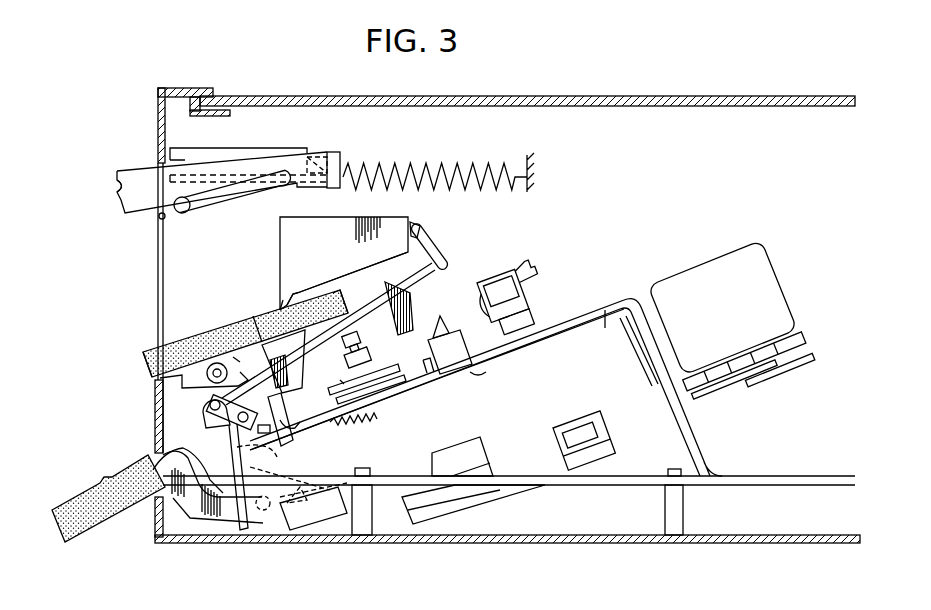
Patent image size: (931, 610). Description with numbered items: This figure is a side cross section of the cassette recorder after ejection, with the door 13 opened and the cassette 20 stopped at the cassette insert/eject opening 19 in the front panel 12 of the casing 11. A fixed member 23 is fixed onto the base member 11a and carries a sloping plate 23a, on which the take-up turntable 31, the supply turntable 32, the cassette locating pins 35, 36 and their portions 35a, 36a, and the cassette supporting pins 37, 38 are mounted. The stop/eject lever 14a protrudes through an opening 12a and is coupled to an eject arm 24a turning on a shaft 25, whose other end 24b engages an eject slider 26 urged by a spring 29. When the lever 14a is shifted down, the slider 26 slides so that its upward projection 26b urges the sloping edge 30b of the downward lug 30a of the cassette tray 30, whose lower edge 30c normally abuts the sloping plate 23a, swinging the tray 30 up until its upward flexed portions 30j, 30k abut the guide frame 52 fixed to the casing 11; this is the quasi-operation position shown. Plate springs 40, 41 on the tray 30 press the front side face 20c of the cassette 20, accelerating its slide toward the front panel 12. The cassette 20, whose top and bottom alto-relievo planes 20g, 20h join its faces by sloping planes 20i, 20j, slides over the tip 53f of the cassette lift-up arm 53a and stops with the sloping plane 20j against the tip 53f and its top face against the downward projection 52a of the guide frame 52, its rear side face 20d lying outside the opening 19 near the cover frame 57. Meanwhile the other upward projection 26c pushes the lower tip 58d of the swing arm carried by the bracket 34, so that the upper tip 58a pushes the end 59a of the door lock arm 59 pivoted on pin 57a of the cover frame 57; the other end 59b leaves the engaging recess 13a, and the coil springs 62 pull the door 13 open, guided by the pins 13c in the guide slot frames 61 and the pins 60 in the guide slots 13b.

The casing 11 is at (324, 96).
The base member 11a is at (360, 543).
The front panel 12 is at (158, 112).
The opening in the front panel 12a is at (162, 425).
The door 13 is at (204, 183).
The engaging recess 13a is at (117, 186).
The guide slots 13b is at (228, 197).
The pins 13c is at (312, 157).
The stop/eject lever 14a is at (80, 502).
The cassette insert/eject opening 19 is at (137, 263).
The cassette 20 is at (267, 334).
The front side face 20c is at (377, 300).
The rear side face 20d is at (150, 364).
The top alto-relievo plane 20g is at (330, 281).
The bottom alto-relievo plane 20h is at (340, 380).
The sloping plane 20i is at (298, 296).
The sloping plane 20j is at (330, 313).
The fixed member 23 is at (532, 357).
The sloping plate 23a is at (605, 310).
The eject arm 24a is at (177, 449).
The paper guide chute lower part 24b is at (317, 500).
The shaft 25 is at (263, 545).
The eject slider 26 is at (393, 387).
The upward projection 26b is at (480, 383).
The upward projection 26c is at (283, 537).
The spring 29 is at (363, 424).
The cassette tray 30 is at (287, 419).
The downward lug 30a is at (367, 348).
The sloping edge 30b is at (412, 315).
The lower edge 30c is at (368, 372).
The upward flexed portion 30j is at (451, 222).
The upward flexed portion 30k is at (414, 228).
The take-up turntable 31 is at (446, 382).
The supply turntable 32 is at (412, 387).
The bracket 34 is at (208, 483).
The cassette locating pin 35 is at (490, 323).
The cassette locating pin 36 is at (463, 352).
The latch plate 35a is at (532, 343).
The latch plate 36a is at (510, 357).
The cassette supporting pin 37 is at (323, 435).
The cassette supporting pin 38 is at (300, 428).
The plate spring 40 is at (457, 247).
The plate spring 41 is at (463, 255).
The guide frame 52 is at (321, 263).
The downward projection 52a is at (282, 300).
The cassette lift-up arm 53a is at (260, 341).
The tip 53f is at (297, 347).
The cover frame 57 is at (245, 333).
The pin 57a is at (210, 363).
The upper tip 58a is at (212, 428).
The lower tip 58d is at (237, 531).
The door lock arm 59 is at (201, 412).
The end of door lock arm 59a is at (238, 358).
The other end of door lock arm 59b is at (160, 380).
The pins 60 is at (159, 216).
The guide slot frames 61 is at (203, 149).
The coil springs 62 is at (405, 168).